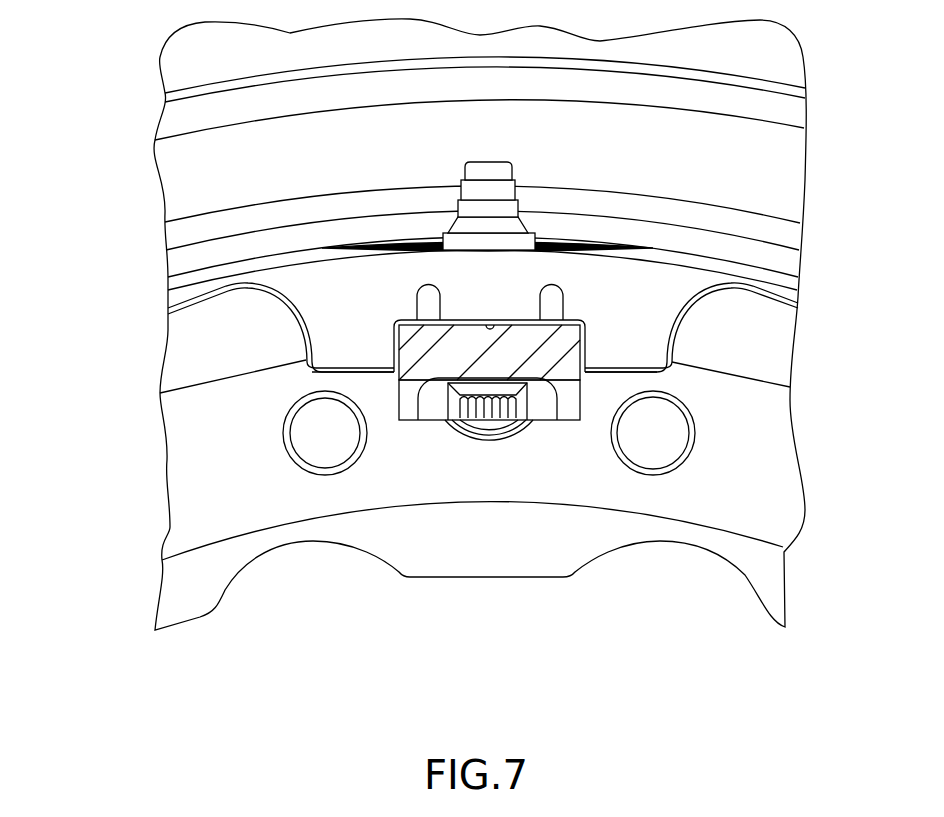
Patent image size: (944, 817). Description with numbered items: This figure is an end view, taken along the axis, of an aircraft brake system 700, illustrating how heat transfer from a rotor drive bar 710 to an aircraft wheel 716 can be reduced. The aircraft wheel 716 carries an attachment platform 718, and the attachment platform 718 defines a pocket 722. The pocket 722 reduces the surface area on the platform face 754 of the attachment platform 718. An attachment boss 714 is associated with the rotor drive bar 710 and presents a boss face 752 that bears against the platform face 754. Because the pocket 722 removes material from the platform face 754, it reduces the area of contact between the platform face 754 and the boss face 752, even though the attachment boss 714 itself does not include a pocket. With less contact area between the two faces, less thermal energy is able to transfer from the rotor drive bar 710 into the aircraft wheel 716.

The aircraft brake system 700 is at (92, 400).
The rotor drive bar 710 is at (572, 408).
The attachment boss 714 is at (445, 363).
The aircraft wheel 716 is at (772, 182).
The attachment platform 718 is at (625, 292).
The pocket 722 is at (548, 303).
The boss face 752 is at (397, 380).
The platform face 754 is at (566, 321).